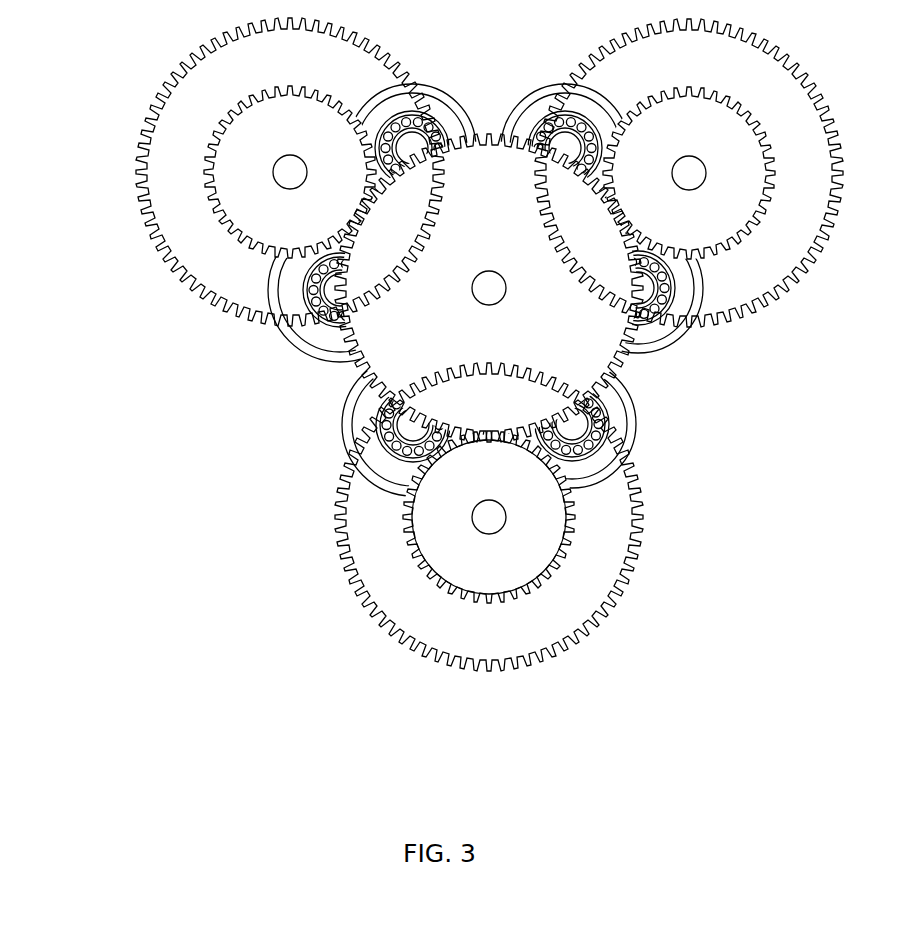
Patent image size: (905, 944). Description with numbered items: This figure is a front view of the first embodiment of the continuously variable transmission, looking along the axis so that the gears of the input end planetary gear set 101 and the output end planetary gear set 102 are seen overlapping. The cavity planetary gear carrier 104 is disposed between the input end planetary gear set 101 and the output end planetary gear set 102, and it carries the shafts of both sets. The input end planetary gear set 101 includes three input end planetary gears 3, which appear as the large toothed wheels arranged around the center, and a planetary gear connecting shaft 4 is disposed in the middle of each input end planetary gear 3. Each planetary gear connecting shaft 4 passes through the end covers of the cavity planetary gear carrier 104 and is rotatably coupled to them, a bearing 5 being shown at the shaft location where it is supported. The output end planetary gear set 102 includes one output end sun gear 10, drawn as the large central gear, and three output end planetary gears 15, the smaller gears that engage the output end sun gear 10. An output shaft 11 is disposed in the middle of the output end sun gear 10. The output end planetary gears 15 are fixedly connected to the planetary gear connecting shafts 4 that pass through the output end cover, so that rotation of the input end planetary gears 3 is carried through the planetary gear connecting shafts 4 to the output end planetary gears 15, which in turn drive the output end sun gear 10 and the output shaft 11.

The input end planetary gear 3 is at (175, 188).
The output end sun gear 10 is at (413, 261).
The output shaft 11 is at (483, 290).
The bearing 5 is at (388, 422).
The planetary gear connecting shaft 4 is at (486, 517).
The output end planetary gear 15 is at (495, 572).
The input end planetary gear set 101 is at (370, 600).
The output end planetary gear set 102 is at (530, 583).
The cavity planetary gear carrier 104 is at (622, 453).